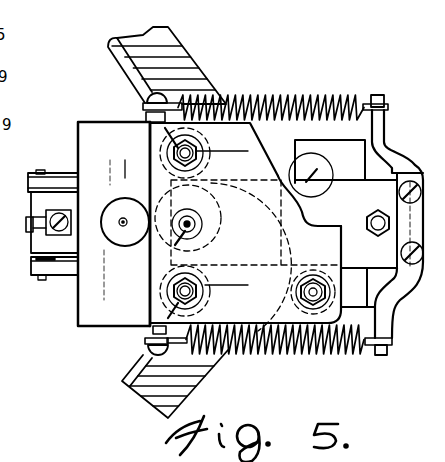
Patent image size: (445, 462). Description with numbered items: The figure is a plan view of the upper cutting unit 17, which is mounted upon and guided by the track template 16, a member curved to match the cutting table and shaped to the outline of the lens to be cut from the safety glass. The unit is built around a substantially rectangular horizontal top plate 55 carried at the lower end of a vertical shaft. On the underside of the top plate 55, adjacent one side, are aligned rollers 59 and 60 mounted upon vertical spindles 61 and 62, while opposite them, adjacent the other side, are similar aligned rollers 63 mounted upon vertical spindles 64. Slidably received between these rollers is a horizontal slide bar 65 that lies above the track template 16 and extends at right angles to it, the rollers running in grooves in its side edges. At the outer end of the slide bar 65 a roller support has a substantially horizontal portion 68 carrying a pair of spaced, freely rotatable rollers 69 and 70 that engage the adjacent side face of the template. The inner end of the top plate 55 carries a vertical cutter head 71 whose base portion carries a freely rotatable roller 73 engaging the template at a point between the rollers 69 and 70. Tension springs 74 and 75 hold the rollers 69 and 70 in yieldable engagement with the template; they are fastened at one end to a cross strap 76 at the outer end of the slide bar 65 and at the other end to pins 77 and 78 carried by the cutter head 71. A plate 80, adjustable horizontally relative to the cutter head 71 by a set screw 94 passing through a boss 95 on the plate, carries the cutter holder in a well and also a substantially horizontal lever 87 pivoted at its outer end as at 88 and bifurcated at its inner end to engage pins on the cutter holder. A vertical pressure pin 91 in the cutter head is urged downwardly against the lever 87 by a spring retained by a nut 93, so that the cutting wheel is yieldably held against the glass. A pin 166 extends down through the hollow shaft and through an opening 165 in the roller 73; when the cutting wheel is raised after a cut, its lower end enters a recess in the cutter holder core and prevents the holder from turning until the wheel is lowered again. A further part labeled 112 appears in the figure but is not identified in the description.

The track template 16 is at (152, 390).
The upper cutting unit 17 is at (320, 150).
The top plate 55 is at (262, 350).
The roller 59 is at (150, 291).
The roller 60 is at (330, 318).
The vertical spindle 61 is at (198, 290).
The vertical spindle 62 is at (318, 265).
The rollers 63 is at (142, 147).
The vertical spindles 64 is at (218, 153).
The slide bar 65 is at (340, 190).
The horizontal portion 68 is at (330, 92).
The roller 69 is at (277, 166).
The roller 70 is at (390, 251).
The cutter head 71 is at (88, 147).
The roller 73 is at (215, 246).
The tension spring 74 is at (258, 97).
The tension spring 75 is at (220, 353).
The cross strap 76 is at (405, 158).
The pin 77 is at (128, 78).
The pin 78 is at (147, 350).
The plate 80 is at (42, 242).
The lever 87 is at (65, 268).
The pivot 88 is at (41, 278).
The pressure pin 91 is at (127, 219).
The nut 93 is at (115, 208).
The set screw 94 is at (26, 219).
The boss 95 is at (66, 240).
The member 112 is at (27, 150).
The opening 165 is at (151, 261).
The pin 166 is at (192, 222).